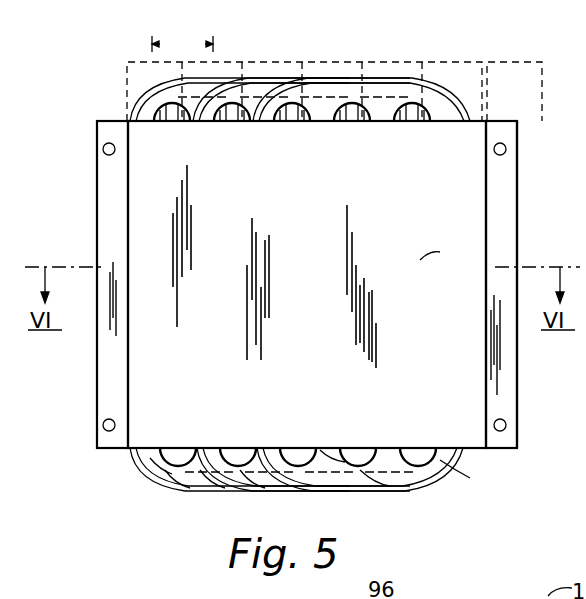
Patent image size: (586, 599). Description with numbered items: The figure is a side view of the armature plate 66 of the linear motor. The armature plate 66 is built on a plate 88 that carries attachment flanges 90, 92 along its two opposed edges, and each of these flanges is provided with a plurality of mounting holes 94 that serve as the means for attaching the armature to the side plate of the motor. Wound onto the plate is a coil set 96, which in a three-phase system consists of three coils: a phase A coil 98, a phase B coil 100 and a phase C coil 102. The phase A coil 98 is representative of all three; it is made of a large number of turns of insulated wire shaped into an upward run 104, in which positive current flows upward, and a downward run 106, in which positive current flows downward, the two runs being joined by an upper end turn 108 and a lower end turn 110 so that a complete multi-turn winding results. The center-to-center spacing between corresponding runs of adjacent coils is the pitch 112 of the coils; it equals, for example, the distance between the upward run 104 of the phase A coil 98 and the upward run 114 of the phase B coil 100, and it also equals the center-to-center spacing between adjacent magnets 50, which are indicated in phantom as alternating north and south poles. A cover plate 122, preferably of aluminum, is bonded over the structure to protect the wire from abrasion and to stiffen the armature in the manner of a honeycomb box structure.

The magnets 50 is at (432, 63).
The armature plate 66 is at (530, 177).
The plate 88 is at (150, 345).
The attachment flange 90 is at (110, 198).
The attachment flange 92 is at (502, 220).
The mounting holes 94 is at (103, 147).
The coil set 96 is at (470, 478).
The phase A coil 98 is at (178, 484).
The phase B coil 100 is at (270, 493).
The phase C coil 102 is at (373, 487).
The upward run 104 is at (153, 462).
The downward run 106 is at (330, 458).
The upper end turn 108 is at (192, 90).
The lower end turn 110 is at (197, 482).
The pitch 112 is at (182, 44).
The upward run 114 is at (258, 487).
The cover plate 122 is at (440, 252).